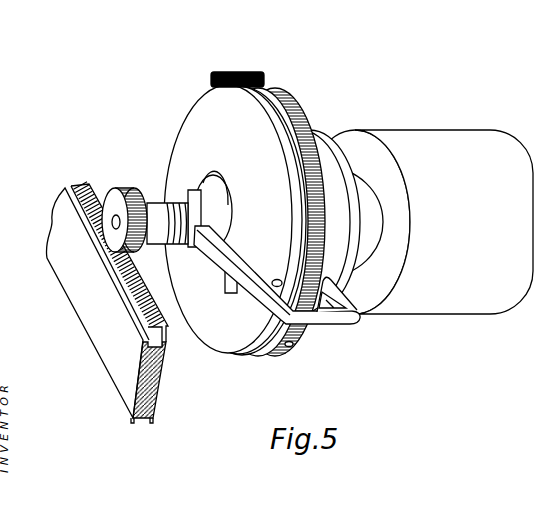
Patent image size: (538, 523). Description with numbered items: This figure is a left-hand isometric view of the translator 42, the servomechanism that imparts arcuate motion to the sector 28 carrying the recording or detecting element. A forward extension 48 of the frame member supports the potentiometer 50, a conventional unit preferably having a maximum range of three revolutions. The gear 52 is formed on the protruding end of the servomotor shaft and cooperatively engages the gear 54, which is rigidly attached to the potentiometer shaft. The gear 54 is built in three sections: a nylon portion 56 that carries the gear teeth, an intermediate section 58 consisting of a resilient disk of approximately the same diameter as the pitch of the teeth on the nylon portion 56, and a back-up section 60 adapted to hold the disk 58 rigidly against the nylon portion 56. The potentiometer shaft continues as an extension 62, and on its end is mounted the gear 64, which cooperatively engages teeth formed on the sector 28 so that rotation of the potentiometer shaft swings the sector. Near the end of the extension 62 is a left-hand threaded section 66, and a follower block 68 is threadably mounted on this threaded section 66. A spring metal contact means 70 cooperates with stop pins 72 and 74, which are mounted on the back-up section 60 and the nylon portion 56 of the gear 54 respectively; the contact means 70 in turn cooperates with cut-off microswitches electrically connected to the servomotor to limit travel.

The sector 28 is at (57, 214).
The translator 42 is at (332, 91).
The forward extension 48 is at (313, 143).
The potentiometer 50 is at (468, 140).
The gear 52 is at (234, 72).
The gear 54 is at (270, 204).
The nylon portion 56 is at (262, 350).
The intermediate section 58 is at (276, 111).
The back-up section 60 is at (196, 132).
The potentiometer shaft extension 62 is at (153, 234).
The gear 64 is at (112, 200).
The left-hand threaded section 66 is at (172, 205).
The follower block 68 is at (214, 270).
The spring metal contact means 70 is at (343, 318).
The stop pin 72 is at (285, 278).
The stop pin 74 is at (292, 342).